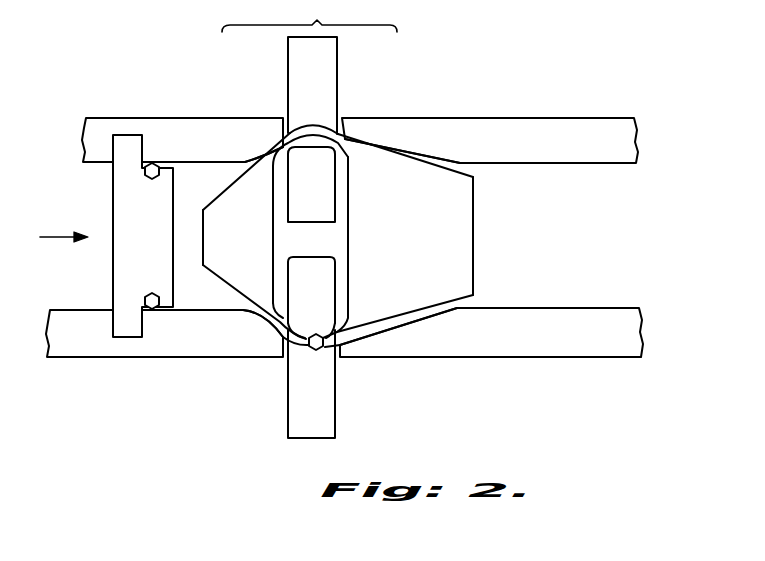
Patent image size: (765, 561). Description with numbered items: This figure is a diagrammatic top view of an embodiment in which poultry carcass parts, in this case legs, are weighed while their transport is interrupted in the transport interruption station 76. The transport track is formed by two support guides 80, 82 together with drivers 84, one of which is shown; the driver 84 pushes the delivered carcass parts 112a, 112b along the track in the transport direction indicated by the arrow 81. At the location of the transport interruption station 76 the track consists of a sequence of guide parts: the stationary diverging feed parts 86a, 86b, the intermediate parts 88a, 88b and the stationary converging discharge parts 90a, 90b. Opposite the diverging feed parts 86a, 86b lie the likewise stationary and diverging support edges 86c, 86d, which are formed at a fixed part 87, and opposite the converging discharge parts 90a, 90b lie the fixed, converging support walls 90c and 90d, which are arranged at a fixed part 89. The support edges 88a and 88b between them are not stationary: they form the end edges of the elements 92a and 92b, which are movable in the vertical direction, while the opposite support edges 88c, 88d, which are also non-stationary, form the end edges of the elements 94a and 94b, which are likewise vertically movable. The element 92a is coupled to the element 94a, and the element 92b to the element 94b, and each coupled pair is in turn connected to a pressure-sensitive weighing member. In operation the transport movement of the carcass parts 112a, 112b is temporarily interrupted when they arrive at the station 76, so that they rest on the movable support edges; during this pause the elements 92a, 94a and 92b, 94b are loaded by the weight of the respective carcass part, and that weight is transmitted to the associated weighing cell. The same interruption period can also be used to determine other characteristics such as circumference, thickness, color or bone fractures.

The transport interruption station 76 is at (308, 19).
The support guide 80 is at (483, 132).
The direction of motion arrow 81 is at (45, 231).
The support guide 82 is at (588, 357).
The driver 84 is at (120, 208).
The diverging feed part 86a is at (262, 148).
The diverging feed part 86b is at (258, 318).
The support edge 86c is at (227, 190).
The support edge 86d is at (237, 287).
The fixed part 87 is at (205, 262).
The support edge 88a is at (318, 127).
The support edge 88b is at (318, 348).
The support edge 88c is at (313, 140).
The support edge 88d is at (302, 330).
The fixed part 89 is at (470, 236).
The converging discharge part 90a is at (410, 152).
The converging discharge part 90b is at (429, 352).
The fixed support wall 90c is at (413, 165).
The fixed support wall 90d is at (430, 303).
The vertically movable element 92a is at (332, 50).
The vertically movable element 92b is at (290, 408).
The vertically movable element 94a is at (328, 202).
The vertically movable element 94b is at (330, 279).
The carcass part 112a is at (153, 163).
The carcass part 112b is at (151, 310).